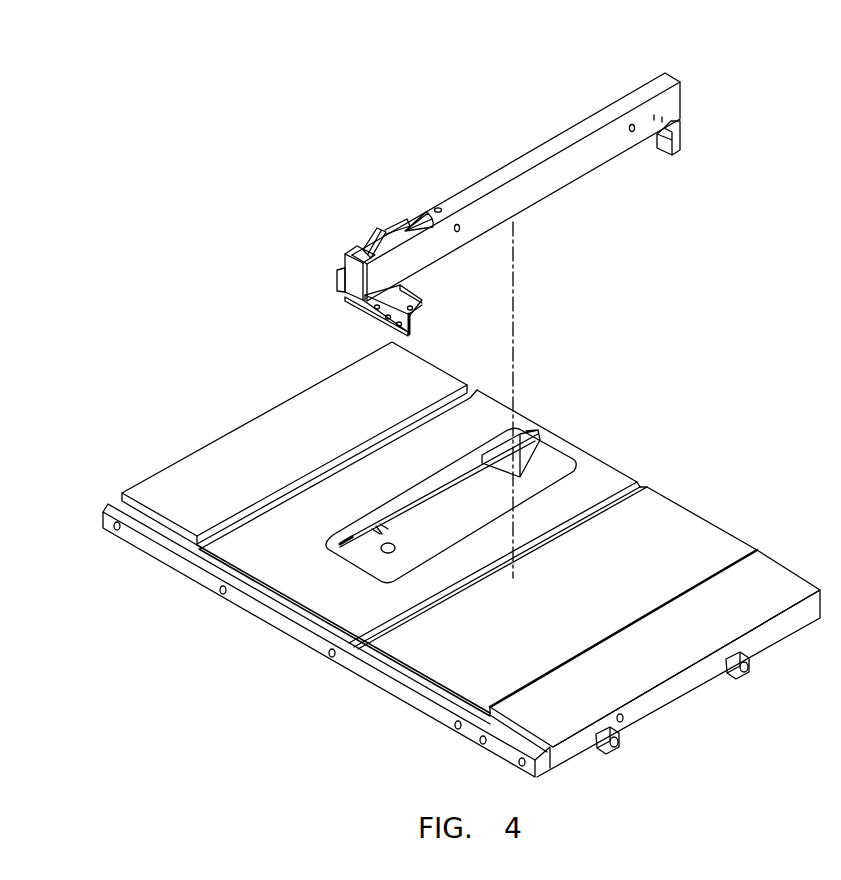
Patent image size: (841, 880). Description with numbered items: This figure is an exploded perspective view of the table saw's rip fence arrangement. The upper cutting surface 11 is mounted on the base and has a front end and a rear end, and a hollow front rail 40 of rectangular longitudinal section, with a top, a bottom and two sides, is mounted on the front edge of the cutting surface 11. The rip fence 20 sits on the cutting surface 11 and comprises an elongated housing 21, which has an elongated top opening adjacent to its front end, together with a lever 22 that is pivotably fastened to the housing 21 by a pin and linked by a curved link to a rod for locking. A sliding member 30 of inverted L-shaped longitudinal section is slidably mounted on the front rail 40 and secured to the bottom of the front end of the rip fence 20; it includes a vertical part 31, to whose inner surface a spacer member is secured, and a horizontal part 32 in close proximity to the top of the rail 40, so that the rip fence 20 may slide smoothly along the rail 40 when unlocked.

The upper cutting surface 11 is at (292, 420).
The rip fence 20 is at (498, 192).
The elongated housing 21 is at (570, 167).
The lever 22 is at (378, 232).
The sliding member 30 is at (337, 281).
The vertical part 31 is at (380, 309).
The horizontal part 32 is at (405, 300).
The hollow front rail 40 is at (175, 562).